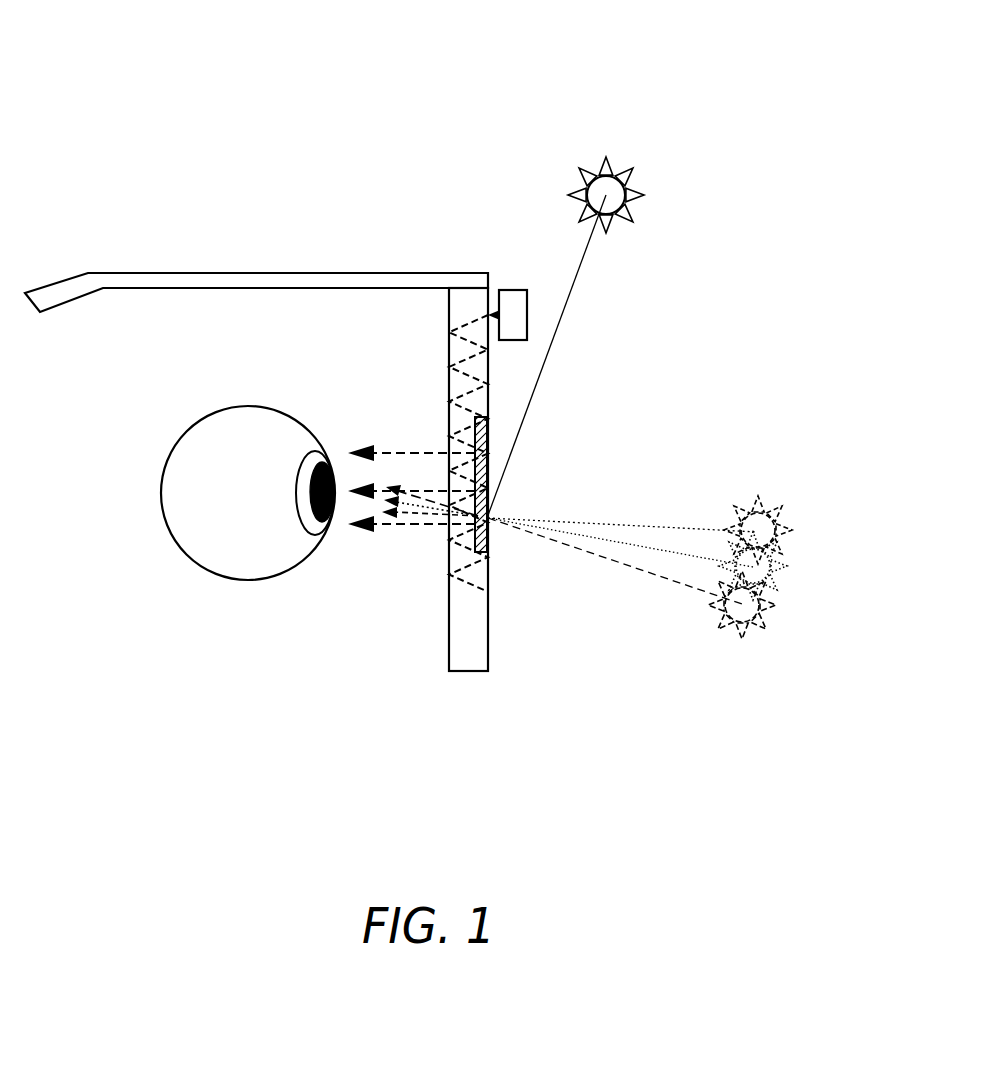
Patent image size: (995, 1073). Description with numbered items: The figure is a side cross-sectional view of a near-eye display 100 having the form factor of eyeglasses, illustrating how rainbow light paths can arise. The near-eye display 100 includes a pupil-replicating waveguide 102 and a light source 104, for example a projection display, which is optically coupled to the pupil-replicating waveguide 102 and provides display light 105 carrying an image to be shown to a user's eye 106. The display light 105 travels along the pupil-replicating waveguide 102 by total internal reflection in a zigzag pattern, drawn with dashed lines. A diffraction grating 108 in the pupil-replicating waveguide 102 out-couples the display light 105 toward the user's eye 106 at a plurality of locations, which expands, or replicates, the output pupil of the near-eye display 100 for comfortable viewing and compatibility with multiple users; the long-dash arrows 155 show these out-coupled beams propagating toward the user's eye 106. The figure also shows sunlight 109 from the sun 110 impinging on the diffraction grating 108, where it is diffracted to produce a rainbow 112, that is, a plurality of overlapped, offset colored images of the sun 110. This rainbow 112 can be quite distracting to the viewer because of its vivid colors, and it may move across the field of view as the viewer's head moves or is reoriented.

The near-eye display 100 is at (311, 122).
The pupil-replicating waveguide 102 is at (488, 643).
The light source 104 is at (510, 290).
The display light 105 is at (449, 380).
The user's eye 106 is at (163, 495).
The diffraction grating 108 is at (487, 448).
The sunlight 109 is at (551, 353).
The sun 110 is at (646, 192).
The rainbow 112 is at (805, 508).
The long-dash arrows 155 is at (395, 525).